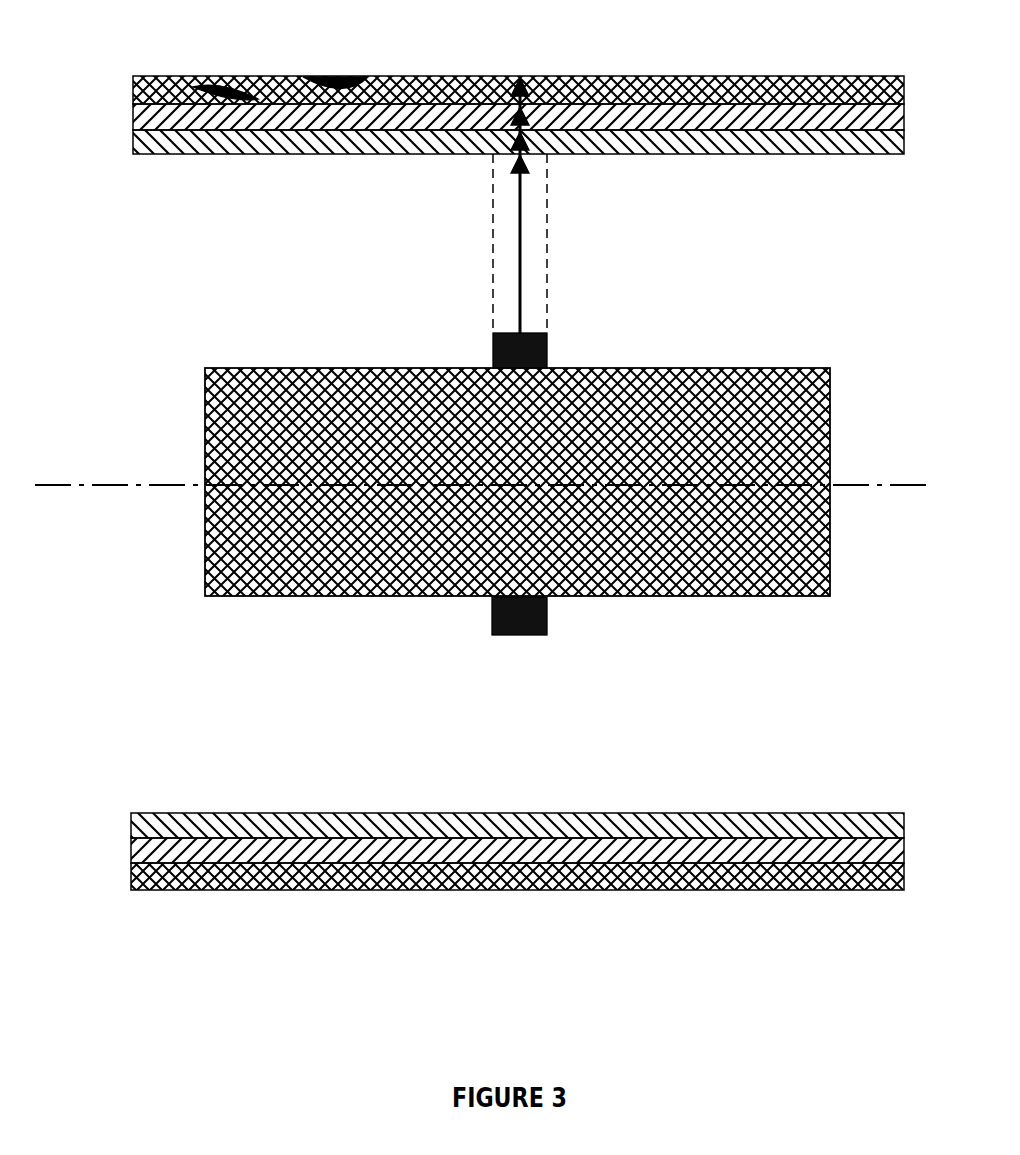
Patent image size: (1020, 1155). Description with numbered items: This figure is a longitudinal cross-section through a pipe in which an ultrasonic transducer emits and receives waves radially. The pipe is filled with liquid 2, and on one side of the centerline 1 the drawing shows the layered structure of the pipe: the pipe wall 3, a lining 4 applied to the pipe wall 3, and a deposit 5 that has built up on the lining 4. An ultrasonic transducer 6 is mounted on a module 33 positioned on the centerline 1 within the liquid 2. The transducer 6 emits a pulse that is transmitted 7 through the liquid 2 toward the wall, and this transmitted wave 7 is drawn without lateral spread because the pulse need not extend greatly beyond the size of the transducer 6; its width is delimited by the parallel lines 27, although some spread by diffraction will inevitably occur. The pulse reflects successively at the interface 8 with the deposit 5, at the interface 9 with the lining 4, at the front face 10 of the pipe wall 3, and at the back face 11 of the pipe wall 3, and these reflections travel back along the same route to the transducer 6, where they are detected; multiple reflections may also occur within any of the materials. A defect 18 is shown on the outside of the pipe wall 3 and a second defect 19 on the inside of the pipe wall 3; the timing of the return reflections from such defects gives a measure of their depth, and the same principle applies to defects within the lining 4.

The centerline 1 is at (847, 487).
The liquid 2 is at (862, 282).
The pipe wall 3 is at (133, 88).
The lining 4 is at (133, 115).
The deposit 5 is at (133, 147).
The ultrasonic transducer 6 is at (547, 353).
The transmitted wave 7 is at (520, 222).
The interface with the deposit 8 is at (523, 152).
The interface with the lining 9 is at (530, 128).
The front face of the pipe wall 10 is at (534, 86).
The back face of the pipe wall 11 is at (521, 79).
The defect 18 is at (208, 78).
The second defect 19 is at (347, 76).
The parallel lines 27 is at (491, 185).
The module 33 is at (750, 598).